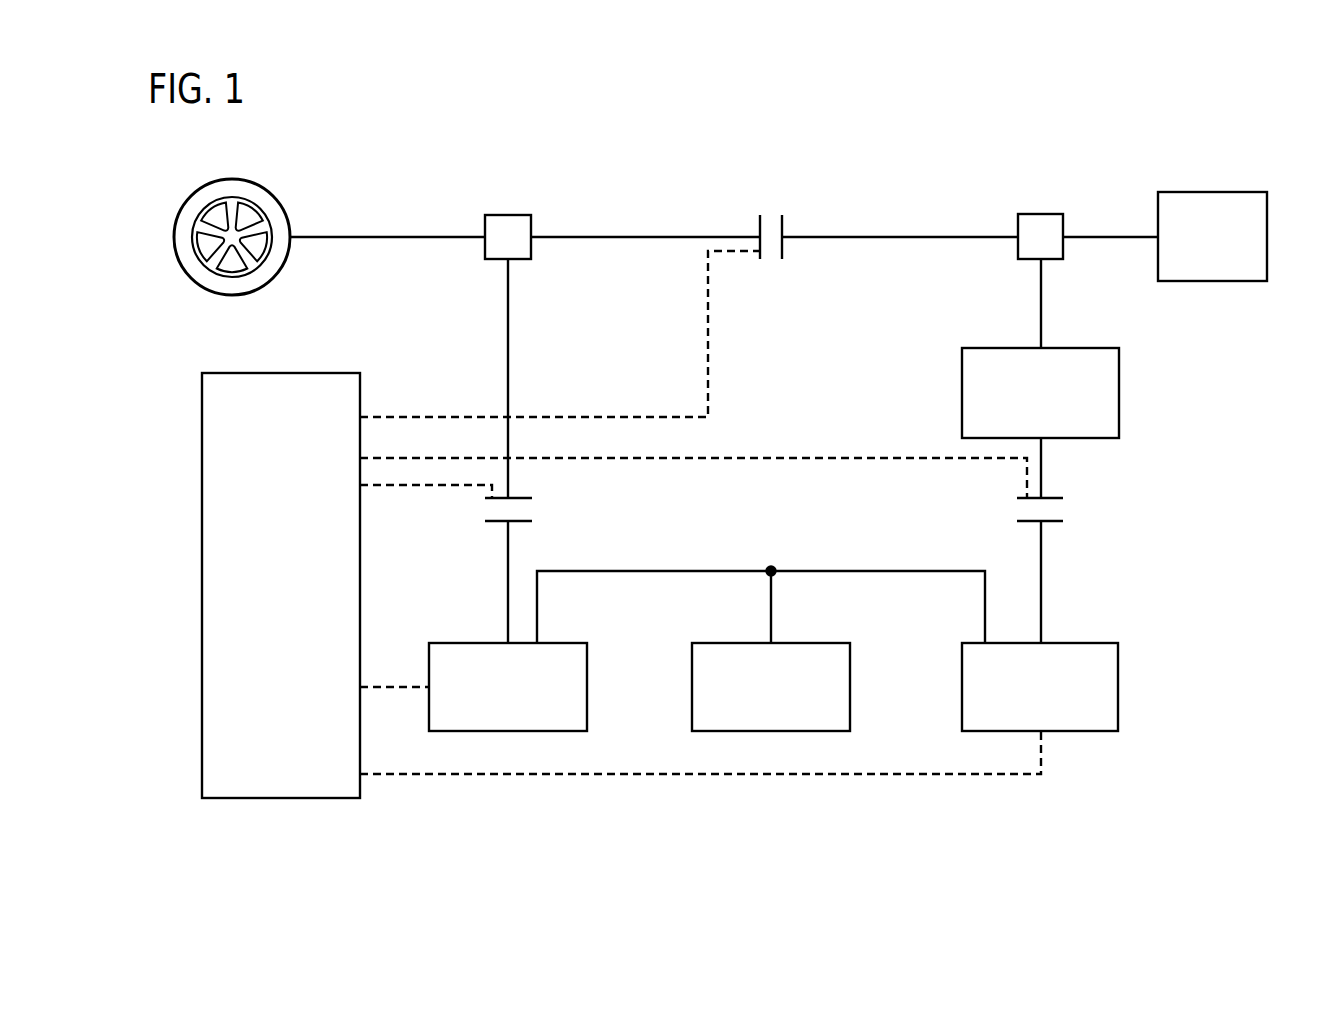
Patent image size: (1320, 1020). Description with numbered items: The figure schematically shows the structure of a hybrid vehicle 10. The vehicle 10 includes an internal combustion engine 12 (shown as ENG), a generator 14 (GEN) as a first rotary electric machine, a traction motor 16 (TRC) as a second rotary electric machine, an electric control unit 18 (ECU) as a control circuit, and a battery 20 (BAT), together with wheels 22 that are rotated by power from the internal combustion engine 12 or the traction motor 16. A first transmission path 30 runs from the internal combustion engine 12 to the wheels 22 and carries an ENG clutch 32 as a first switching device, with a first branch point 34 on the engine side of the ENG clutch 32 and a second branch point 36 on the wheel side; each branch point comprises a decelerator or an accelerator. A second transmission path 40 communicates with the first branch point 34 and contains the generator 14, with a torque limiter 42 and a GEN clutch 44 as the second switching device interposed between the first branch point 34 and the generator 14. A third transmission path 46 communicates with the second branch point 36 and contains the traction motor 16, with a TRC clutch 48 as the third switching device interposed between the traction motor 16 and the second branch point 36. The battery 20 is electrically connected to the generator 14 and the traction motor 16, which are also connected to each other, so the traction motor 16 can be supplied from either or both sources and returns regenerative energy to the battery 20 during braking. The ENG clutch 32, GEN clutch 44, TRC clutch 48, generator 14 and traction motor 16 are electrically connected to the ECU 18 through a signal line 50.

The vehicle 10 is at (1149, 116).
The internal combustion engine 12 is at (1184, 192).
The generator 14 is at (1100, 643).
The traction motor 16 is at (450, 643).
The electric control unit 18 is at (221, 373).
The battery 20 is at (829, 643).
The wheels 22 is at (178, 212).
The first transmission path 30 is at (1113, 237).
The ENG clutch 32 is at (785, 224).
The first branch point 34 is at (1030, 214).
The second branch point 36 is at (500, 215).
The second transmission path 40 is at (1041, 312).
The torque limiter 42 is at (1119, 372).
The GEN clutch 44 is at (1052, 522).
The third transmission path 46 is at (508, 330).
The TRC clutch 48 is at (493, 522).
The signal line 50 is at (710, 316).